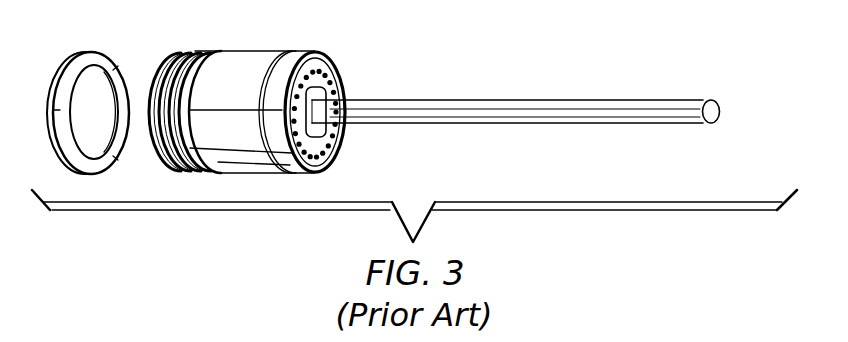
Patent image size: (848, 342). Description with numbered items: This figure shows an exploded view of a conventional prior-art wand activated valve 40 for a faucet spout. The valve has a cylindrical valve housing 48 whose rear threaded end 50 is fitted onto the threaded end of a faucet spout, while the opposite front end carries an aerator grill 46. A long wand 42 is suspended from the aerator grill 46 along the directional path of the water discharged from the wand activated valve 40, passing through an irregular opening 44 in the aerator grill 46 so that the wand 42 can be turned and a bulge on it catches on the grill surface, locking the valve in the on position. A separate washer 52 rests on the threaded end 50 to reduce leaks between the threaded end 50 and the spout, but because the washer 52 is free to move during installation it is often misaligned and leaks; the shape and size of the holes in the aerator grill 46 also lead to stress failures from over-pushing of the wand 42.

The wand activated valve 40 is at (624, 56).
The wand 42 is at (580, 100).
The irregular opening 44 is at (334, 96).
The aerator grill 46 is at (321, 73).
The cylindrical valve housing 48 is at (263, 50).
The threaded end 50 is at (188, 50).
The washer 52 is at (91, 50).